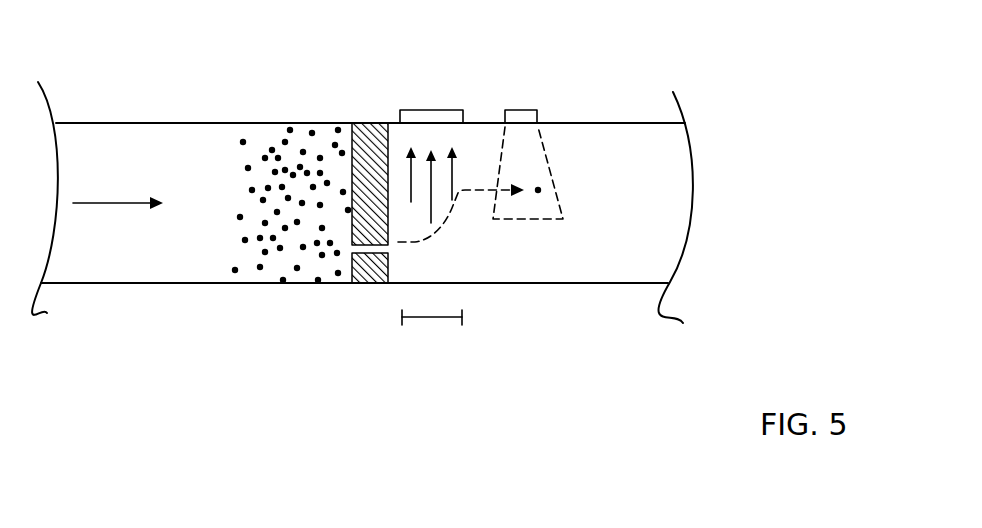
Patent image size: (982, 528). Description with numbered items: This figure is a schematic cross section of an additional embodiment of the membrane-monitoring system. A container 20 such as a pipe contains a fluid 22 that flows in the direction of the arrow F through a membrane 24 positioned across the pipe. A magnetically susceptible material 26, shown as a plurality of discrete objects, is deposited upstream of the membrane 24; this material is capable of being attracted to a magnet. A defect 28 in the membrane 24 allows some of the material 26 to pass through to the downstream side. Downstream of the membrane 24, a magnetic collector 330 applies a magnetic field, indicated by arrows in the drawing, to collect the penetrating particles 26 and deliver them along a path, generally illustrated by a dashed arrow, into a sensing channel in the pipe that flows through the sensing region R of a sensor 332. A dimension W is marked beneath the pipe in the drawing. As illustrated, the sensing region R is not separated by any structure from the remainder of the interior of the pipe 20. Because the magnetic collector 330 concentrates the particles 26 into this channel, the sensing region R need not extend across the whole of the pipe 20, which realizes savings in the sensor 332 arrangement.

The container 20 is at (137, 122).
The fluid 22 is at (156, 167).
The membrane 24 is at (375, 122).
The magnetically susceptible material 26 is at (274, 282).
The defect 28 is at (371, 283).
The magnetic collector 330 is at (423, 110).
The sensor 332 is at (535, 110).
The direction of flow F is at (94, 205).
The sensing region R is at (548, 162).
The width W is at (416, 318).